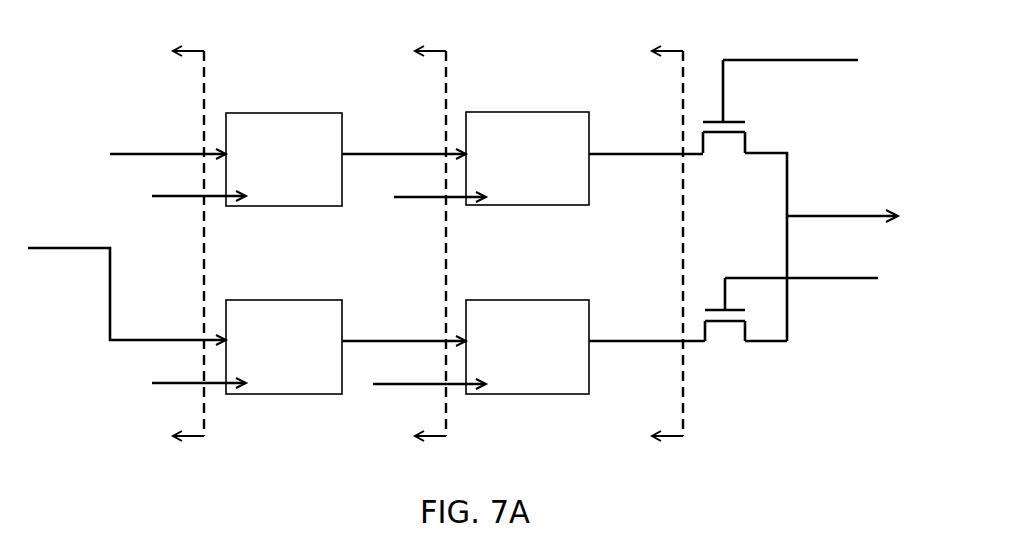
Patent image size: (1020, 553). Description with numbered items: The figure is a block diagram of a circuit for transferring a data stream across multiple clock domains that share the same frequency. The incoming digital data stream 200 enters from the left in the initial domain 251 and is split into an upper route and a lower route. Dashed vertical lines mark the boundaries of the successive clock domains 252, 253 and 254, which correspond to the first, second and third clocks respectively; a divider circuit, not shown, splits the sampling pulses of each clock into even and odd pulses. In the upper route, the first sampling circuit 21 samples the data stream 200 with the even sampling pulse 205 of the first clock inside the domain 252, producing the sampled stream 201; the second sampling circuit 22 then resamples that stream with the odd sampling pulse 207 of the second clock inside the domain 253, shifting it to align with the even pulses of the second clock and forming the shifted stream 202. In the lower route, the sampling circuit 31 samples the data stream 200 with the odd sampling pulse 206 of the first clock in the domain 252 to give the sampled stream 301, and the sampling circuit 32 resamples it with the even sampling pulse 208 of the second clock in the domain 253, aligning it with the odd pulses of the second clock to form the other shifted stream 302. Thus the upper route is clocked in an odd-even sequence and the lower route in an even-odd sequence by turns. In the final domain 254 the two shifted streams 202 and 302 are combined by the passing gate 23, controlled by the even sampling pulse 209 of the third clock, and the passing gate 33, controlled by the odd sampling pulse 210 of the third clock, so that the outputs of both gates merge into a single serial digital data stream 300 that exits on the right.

The digital data stream DATA0 200 is at (103, 247).
The sampling circuit 21 is at (278, 113).
The sampling circuit 22 is at (507, 112).
The sampling circuit 31 is at (279, 300).
The sampling circuit 32 is at (507, 300).
The sampled digital data stream DATA1 201 is at (362, 154).
The shifted sampled data stream DATA3 202 is at (600, 154).
The sampled data stream DATA2 301 is at (362, 341).
The shifted sampled data stream DATA4 302 is at (600, 341).
The sampling pulse CLK1_e 205 is at (215, 197).
The sampling pulse CLK1_o 206 is at (215, 384).
The sampling pulse CLK2_o 207 is at (455, 197).
The sampling pulse CLK2_e 208 is at (455, 384).
The sampling pulse CLK3_e 209 is at (737, 60).
The sampling pulse CLK3_o 210 is at (767, 278).
The passing gate 23 is at (745, 124).
The passing gate 33 is at (737, 322).
The serial digital data DATA5 300 is at (808, 215).
The clock period D 251 is at (153, 243).
The clock domain D+1 252 is at (384, 243).
The clock domain D+2 253 is at (622, 243).
The clock domain D+3 254 is at (779, 432).